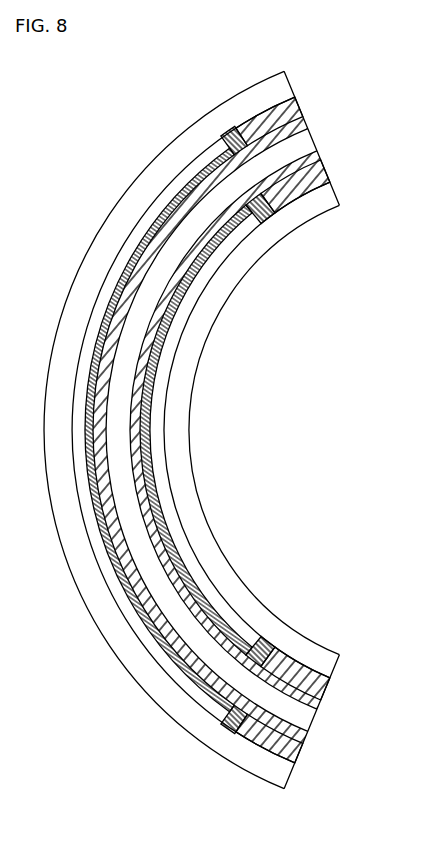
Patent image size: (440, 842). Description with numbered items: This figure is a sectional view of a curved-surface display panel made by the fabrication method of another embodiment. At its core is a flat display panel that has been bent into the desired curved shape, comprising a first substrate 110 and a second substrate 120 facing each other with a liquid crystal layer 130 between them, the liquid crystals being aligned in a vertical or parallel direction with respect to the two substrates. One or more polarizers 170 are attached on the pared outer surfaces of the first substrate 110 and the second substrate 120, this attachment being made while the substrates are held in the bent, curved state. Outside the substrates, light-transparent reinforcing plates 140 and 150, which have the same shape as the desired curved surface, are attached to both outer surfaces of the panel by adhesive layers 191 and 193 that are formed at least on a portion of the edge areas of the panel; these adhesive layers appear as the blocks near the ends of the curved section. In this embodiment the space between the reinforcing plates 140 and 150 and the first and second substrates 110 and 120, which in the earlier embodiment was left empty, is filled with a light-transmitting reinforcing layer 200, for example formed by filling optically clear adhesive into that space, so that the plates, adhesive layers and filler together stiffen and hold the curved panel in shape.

The first substrate 110 is at (321, 694).
The second substrate 120 is at (296, 744).
The liquid crystal layer 130 is at (313, 721).
The reinforcing plate 140 is at (333, 667).
The reinforcing plate 150 is at (288, 776).
The polarizer 170 is at (186, 557).
The adhesive layer 191 is at (266, 226).
The adhesive layer 193 is at (228, 125).
The reinforcing layer 200 is at (128, 250).